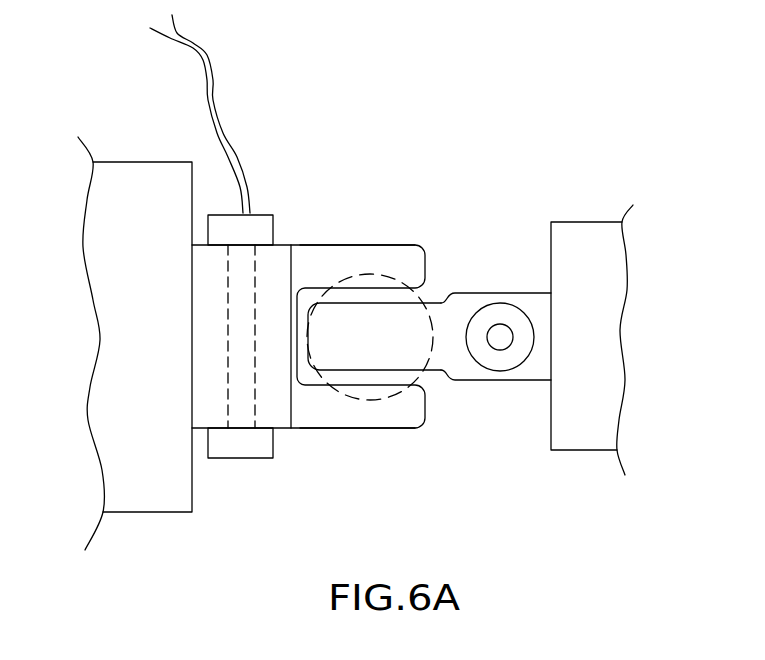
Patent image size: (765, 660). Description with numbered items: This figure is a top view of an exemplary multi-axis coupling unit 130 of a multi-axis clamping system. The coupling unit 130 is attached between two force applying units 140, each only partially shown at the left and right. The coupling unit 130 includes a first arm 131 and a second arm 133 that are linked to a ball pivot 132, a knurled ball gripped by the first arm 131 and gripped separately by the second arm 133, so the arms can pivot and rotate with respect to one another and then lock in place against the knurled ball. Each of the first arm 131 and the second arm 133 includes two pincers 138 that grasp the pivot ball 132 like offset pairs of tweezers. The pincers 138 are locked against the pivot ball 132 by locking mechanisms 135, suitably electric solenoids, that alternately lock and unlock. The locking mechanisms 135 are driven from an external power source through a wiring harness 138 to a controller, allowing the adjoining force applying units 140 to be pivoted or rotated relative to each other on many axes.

The multi-axis coupling unit 130 is at (450, 106).
The first arm 131 is at (311, 233).
The ball pivot 132 is at (433, 382).
The second arm 133 is at (480, 280).
The locking mechanism 135 is at (257, 215).
The pincers 138 is at (188, 58).
The force applying unit 140 is at (129, 136).